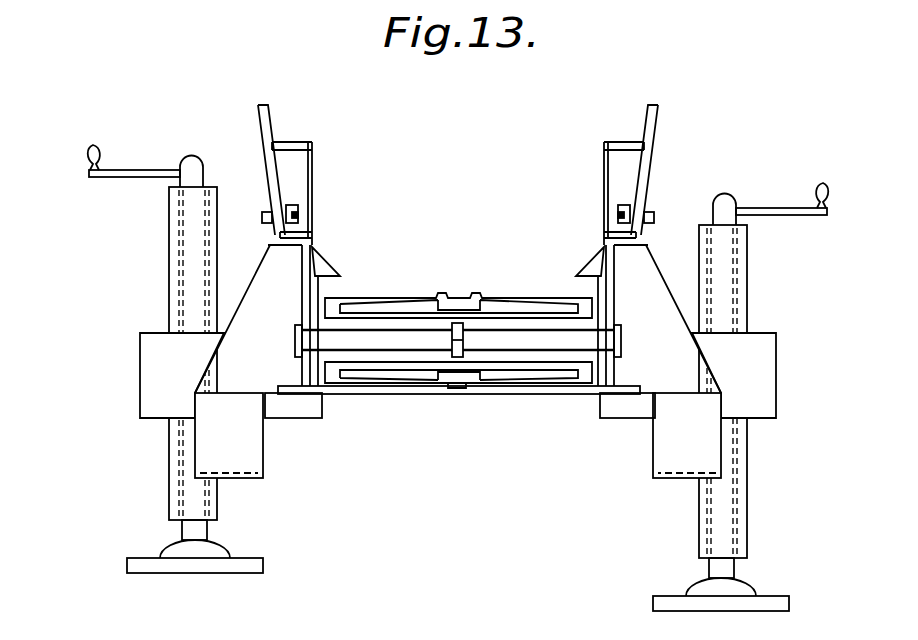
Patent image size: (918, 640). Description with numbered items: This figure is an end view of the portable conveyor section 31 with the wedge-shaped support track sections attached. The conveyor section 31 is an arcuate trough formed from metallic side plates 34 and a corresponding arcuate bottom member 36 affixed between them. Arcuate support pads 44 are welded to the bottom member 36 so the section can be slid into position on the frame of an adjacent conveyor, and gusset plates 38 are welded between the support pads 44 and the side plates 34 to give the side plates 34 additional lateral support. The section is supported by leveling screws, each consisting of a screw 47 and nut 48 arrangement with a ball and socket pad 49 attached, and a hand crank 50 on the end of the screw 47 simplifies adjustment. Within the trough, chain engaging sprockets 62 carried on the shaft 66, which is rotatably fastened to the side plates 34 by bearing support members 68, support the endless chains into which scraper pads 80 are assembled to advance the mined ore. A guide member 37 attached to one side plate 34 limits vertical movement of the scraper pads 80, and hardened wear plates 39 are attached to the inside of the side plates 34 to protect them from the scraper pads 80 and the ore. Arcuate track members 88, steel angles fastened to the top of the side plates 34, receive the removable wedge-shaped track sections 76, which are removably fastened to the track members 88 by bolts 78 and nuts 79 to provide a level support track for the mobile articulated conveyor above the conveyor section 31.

The conveyor section 31 is at (442, 358).
The side plates 34 is at (300, 307).
The bottom member 36 is at (503, 392).
The guide member 37 is at (323, 263).
The gusset plates 38 is at (277, 287).
The wear plates 39 is at (312, 293).
The support pads 44 is at (223, 453).
The screw 47 is at (173, 208).
The nut 48 is at (152, 363).
The ball and socket pad 49 is at (188, 567).
The hand crank 50 is at (127, 172).
The chain engaging sprockets 62 is at (462, 338).
The idler shafts 66 is at (365, 338).
The bearing support members 68 is at (300, 337).
The track sections 76 is at (296, 170).
The bolts 78 is at (295, 215).
The nuts 79 is at (292, 207).
The scraper pads 80 is at (453, 303).
The arcuate track members 88 is at (267, 205).